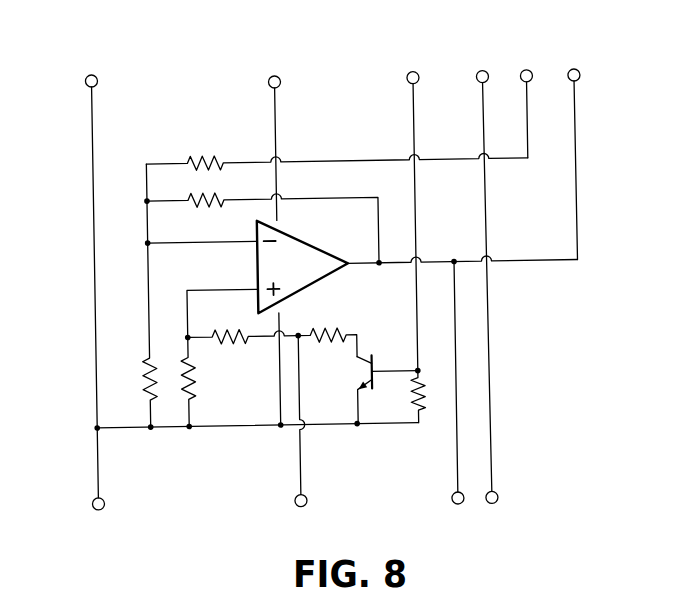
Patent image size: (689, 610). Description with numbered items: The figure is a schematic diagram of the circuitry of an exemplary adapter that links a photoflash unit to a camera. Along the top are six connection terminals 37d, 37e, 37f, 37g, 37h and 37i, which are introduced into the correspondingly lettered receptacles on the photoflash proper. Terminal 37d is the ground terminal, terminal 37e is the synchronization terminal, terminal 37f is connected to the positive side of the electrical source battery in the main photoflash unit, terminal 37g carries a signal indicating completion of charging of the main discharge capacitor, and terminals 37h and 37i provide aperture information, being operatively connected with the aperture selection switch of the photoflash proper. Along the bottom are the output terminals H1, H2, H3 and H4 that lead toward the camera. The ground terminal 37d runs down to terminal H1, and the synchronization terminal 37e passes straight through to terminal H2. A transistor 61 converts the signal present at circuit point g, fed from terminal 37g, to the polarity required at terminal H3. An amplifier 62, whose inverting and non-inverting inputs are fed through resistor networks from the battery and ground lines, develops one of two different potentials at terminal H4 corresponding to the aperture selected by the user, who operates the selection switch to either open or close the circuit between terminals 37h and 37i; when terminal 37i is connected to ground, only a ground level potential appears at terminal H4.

The connection terminal 37d is at (94, 234).
The connection terminal 37f is at (276, 130).
The connection terminal 37g is at (415, 230).
The connection terminal 37e is at (476, 264).
The connection terminal 37h is at (526, 97).
The connection terminal 37i is at (575, 148).
The amplifier 62 is at (304, 237).
The transistor 61 is at (361, 357).
The terminal H1 is at (97, 488).
The terminal H2 is at (493, 517).
The terminal H3 is at (300, 440).
The terminal H4 is at (456, 402).